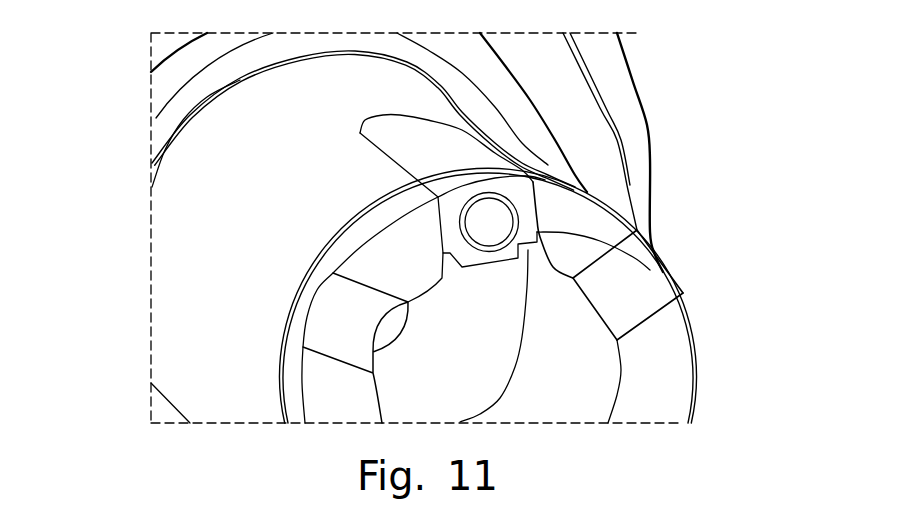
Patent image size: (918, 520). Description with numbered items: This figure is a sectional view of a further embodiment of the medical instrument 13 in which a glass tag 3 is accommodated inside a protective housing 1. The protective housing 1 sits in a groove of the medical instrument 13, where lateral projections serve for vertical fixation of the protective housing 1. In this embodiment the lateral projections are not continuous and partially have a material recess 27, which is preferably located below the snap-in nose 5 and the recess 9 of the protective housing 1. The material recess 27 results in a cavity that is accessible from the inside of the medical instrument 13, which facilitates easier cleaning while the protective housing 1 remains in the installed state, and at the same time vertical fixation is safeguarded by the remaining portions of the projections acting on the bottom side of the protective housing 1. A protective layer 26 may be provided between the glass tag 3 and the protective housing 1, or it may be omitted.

The protective housing 1 is at (407, 142).
The medical instrument 13 is at (347, 245).
The protective layer 26 is at (490, 215).
The glass tag 3 is at (512, 205).
The snap-in nose 5 is at (527, 248).
The material recess 27 is at (620, 344).
The recess 9 is at (440, 248).